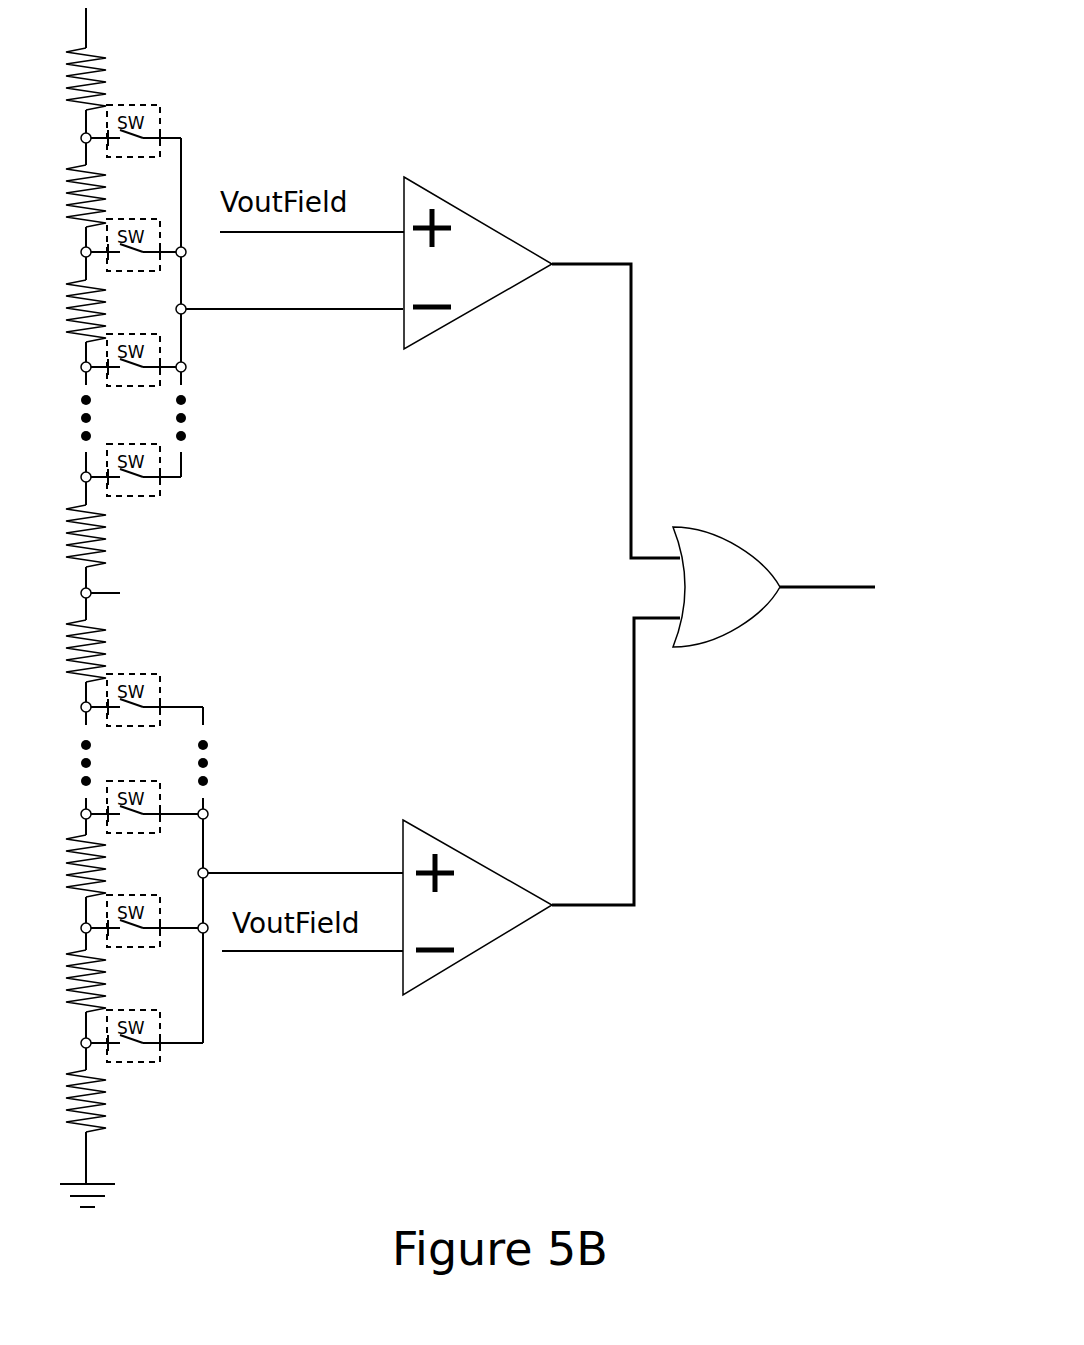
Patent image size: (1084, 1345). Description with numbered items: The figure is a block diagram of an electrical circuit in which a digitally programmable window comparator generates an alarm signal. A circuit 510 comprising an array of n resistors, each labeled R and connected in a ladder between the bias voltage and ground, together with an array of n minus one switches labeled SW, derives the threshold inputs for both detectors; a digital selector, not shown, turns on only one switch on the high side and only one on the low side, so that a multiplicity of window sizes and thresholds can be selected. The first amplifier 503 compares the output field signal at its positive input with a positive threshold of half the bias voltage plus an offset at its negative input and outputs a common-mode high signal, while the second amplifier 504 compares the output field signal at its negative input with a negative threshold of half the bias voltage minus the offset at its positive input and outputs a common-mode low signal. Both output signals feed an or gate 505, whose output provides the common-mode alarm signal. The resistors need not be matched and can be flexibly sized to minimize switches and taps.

The circuit 510 is at (165, 24).
The first amplifier 503 is at (477, 207).
The second amplifier 504 is at (425, 832).
The or gate 505 is at (745, 535).